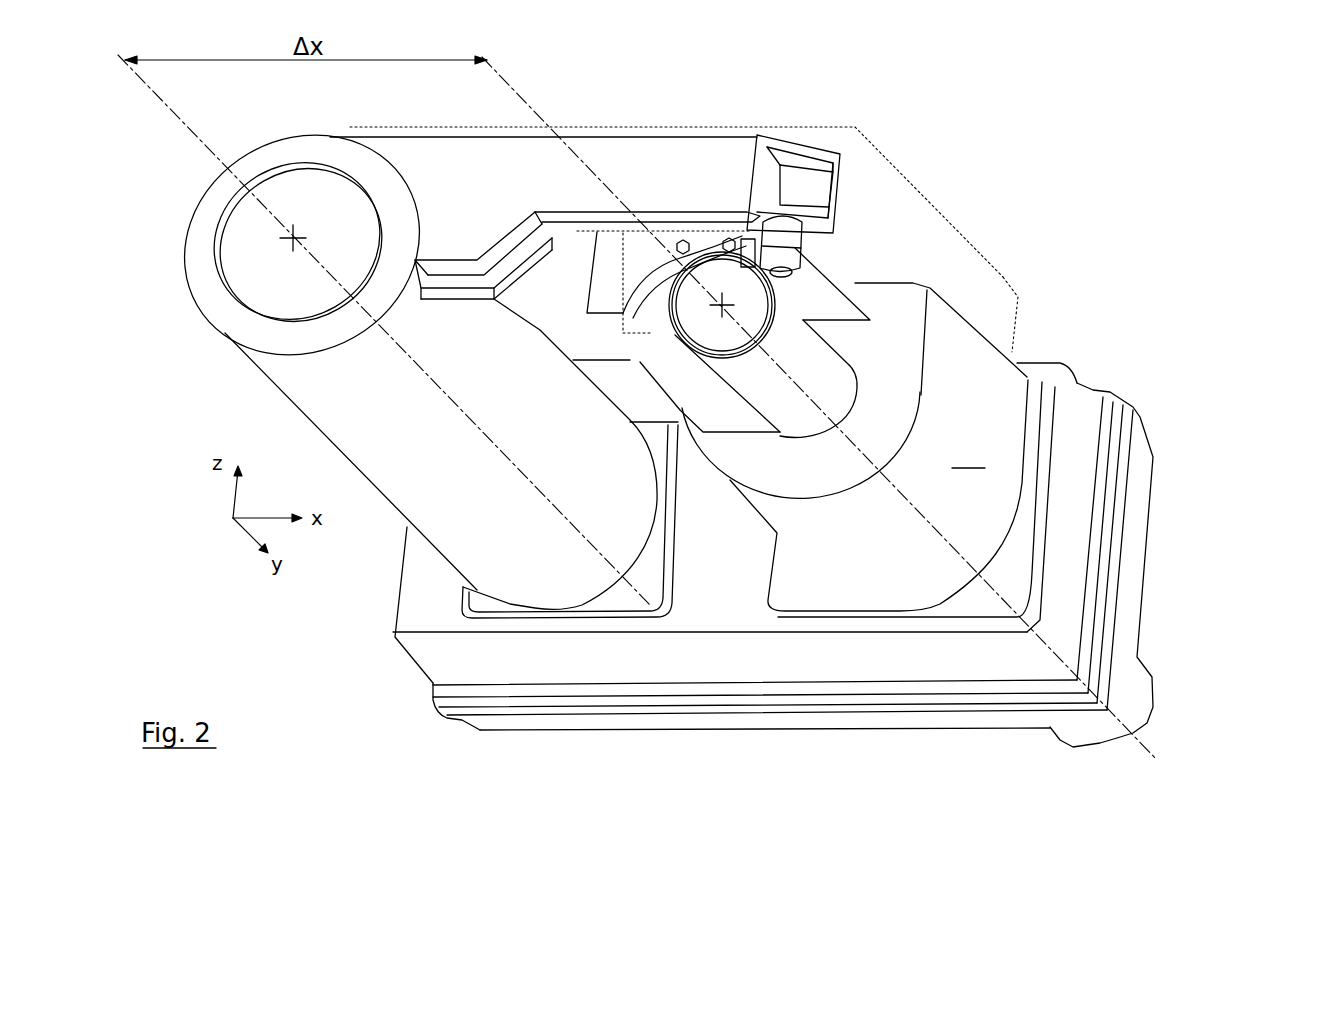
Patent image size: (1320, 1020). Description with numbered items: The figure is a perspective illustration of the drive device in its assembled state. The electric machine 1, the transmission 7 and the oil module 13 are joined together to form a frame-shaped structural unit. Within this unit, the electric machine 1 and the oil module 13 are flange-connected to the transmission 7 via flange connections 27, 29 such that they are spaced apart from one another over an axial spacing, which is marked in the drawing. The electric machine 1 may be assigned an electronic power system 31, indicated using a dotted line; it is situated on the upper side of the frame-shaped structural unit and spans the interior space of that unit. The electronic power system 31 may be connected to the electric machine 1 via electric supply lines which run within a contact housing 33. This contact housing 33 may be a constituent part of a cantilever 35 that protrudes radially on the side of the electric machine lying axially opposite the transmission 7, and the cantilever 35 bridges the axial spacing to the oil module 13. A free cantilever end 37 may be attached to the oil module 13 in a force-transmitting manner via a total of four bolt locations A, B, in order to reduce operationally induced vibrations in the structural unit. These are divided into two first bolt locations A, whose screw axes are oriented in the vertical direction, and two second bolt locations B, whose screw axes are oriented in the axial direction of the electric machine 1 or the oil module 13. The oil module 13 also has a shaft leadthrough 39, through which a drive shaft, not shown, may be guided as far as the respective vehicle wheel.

The electric machine 1 is at (316, 433).
The transmission 7 is at (1088, 384).
The oil module 13 is at (879, 457).
The flange connection 27 is at (500, 632).
The flange connection 29 is at (820, 600).
The electronic power system 31 is at (1003, 277).
The contact housing 33 is at (610, 160).
The cantilever 35 is at (460, 287).
The free cantilever end 37 is at (737, 268).
The shaft leadthrough 39 is at (849, 362).
The first bolt locations A is at (694, 207).
The second bolt locations B is at (781, 275).